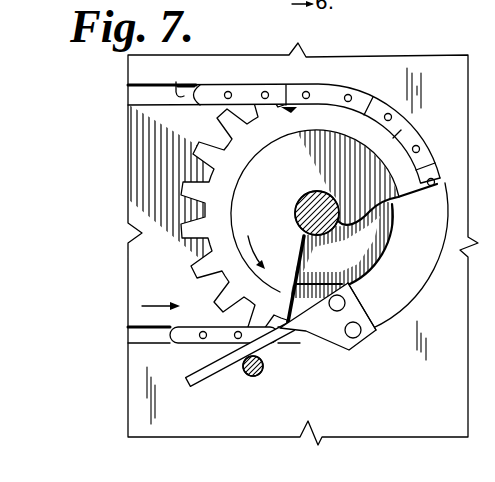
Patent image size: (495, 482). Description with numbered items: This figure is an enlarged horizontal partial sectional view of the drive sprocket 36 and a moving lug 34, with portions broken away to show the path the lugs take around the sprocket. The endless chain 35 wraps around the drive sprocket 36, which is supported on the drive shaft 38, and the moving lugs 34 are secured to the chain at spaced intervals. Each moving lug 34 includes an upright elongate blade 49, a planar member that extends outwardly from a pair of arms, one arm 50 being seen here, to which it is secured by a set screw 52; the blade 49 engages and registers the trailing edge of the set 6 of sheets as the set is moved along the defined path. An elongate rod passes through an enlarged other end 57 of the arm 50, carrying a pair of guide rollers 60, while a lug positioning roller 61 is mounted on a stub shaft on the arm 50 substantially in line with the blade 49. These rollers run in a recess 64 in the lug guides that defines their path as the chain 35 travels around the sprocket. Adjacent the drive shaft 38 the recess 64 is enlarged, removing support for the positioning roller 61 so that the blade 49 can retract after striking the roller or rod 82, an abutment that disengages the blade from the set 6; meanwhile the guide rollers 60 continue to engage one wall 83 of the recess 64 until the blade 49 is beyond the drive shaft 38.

The set 6 is at (458, 178).
The moving lug 34 is at (211, 376).
The endless chain 35 is at (364, 96).
The drive sprocket 36 is at (395, 148).
The drive shaft 38 is at (309, 200).
The upright elongate blade 49 is at (195, 376).
The arm 50 is at (338, 326).
The set screw 52 is at (282, 313).
The other end 57 is at (368, 328).
The guide roller 60 is at (357, 336).
The lug positioning roller 61 is at (334, 305).
The recess 64 is at (172, 79).
The roller or rod 82 is at (260, 370).
The wall 83 is at (410, 297).